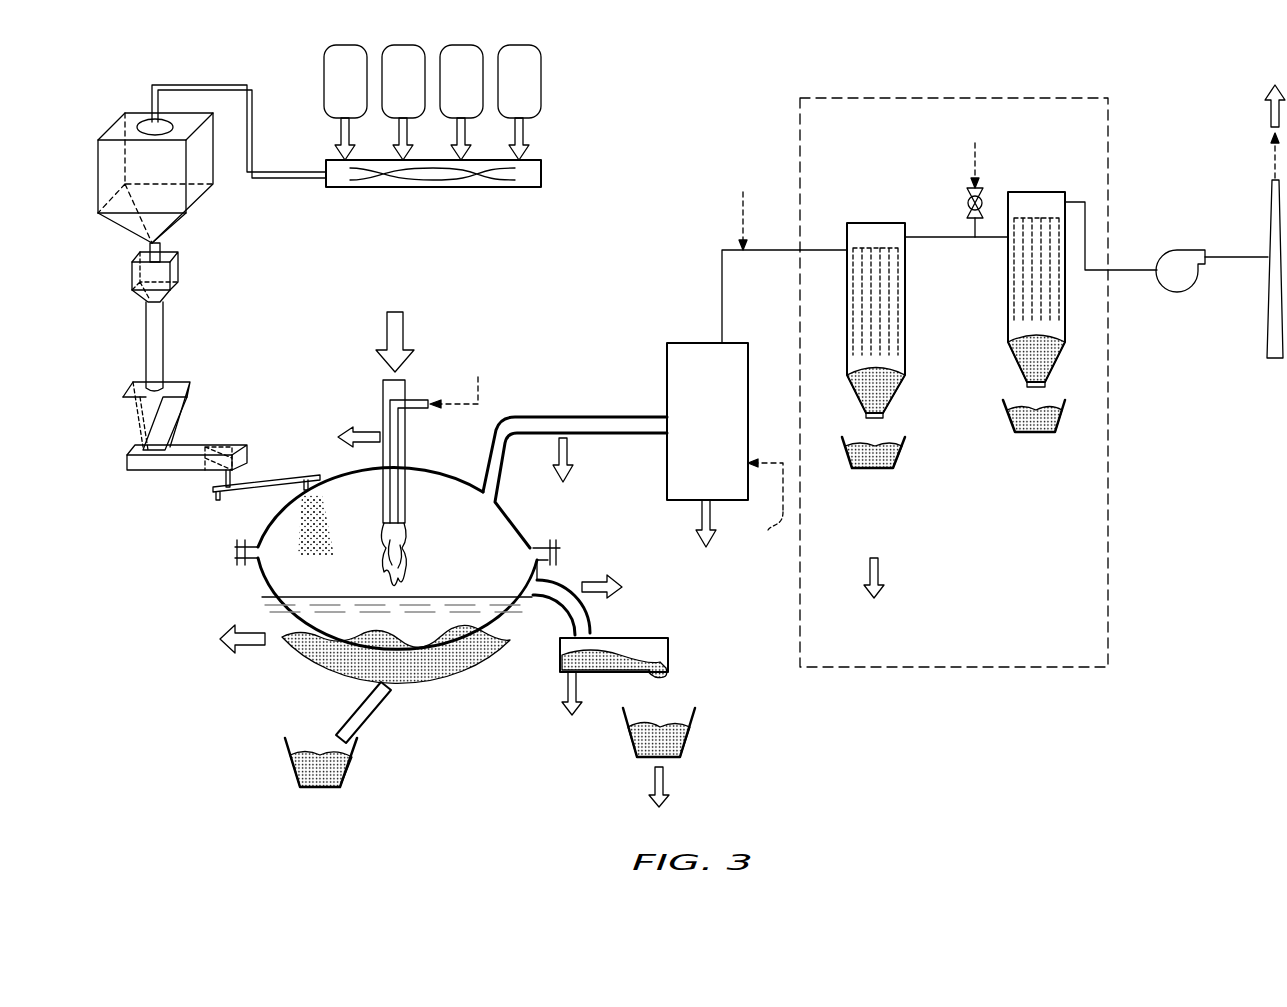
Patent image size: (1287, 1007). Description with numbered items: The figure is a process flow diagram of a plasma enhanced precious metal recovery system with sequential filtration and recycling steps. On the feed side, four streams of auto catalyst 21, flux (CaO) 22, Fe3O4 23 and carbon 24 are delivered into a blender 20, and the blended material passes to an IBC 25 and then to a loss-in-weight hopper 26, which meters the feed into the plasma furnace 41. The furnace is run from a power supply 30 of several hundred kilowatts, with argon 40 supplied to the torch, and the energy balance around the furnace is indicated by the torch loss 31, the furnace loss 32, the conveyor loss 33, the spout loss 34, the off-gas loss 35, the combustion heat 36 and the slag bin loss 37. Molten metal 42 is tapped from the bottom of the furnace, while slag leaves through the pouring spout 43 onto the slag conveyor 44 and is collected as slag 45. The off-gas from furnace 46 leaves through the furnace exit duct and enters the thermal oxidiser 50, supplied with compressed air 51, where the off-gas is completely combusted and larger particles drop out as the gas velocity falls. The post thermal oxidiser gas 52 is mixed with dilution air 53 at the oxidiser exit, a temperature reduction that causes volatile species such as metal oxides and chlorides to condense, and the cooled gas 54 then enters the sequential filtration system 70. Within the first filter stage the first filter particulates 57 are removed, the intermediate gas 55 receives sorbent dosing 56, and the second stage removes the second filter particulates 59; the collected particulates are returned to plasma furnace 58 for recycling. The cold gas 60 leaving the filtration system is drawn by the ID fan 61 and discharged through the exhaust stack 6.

The exhaust stack 6 is at (1268, 112).
The blender 20 is at (521, 188).
The auto catalyst 21 is at (358, 90).
The flux (CaO) 22 is at (416, 90).
The Fe3O4 23 is at (474, 90).
The carbon 24 is at (532, 90).
The IBC 25 is at (166, 192).
The loss-in-weight hopper 26 is at (218, 442).
The power supply 30 is at (387, 318).
The torch loss 31 is at (360, 430).
The furnace loss 32 is at (255, 648).
The conveyor loss 33 is at (565, 683).
The spout loss 34 is at (592, 580).
The off-gas loss 35 is at (575, 470).
The combustion heat 36 is at (700, 520).
The slag bin loss 37 is at (668, 777).
The argon 40 is at (456, 379).
The plasma furnace 41 is at (412, 555).
The metal 42 is at (292, 768).
The pouring spout 43 is at (592, 613).
The slag conveyor 44 is at (670, 650).
The slag 45 is at (632, 742).
The off-gas from furnace 46 is at (622, 415).
The thermal oxidiser 50 is at (722, 434).
The compressed air 51 is at (761, 504).
The post thermal oxidiser gas 52 is at (720, 282).
The dilution air 53 is at (738, 200).
The cooled gas 54 is at (782, 248).
The gas 55 is at (937, 240).
The sorbent dosing 56 is at (975, 150).
The first filter particulates 57 is at (895, 463).
The to plasma furnace 58 is at (880, 565).
The second filter particulates 59 is at (1008, 420).
The cold gas 60 is at (1142, 268).
The ID fan 61 is at (1178, 293).
The sequential filtration system 70 is at (824, 96).